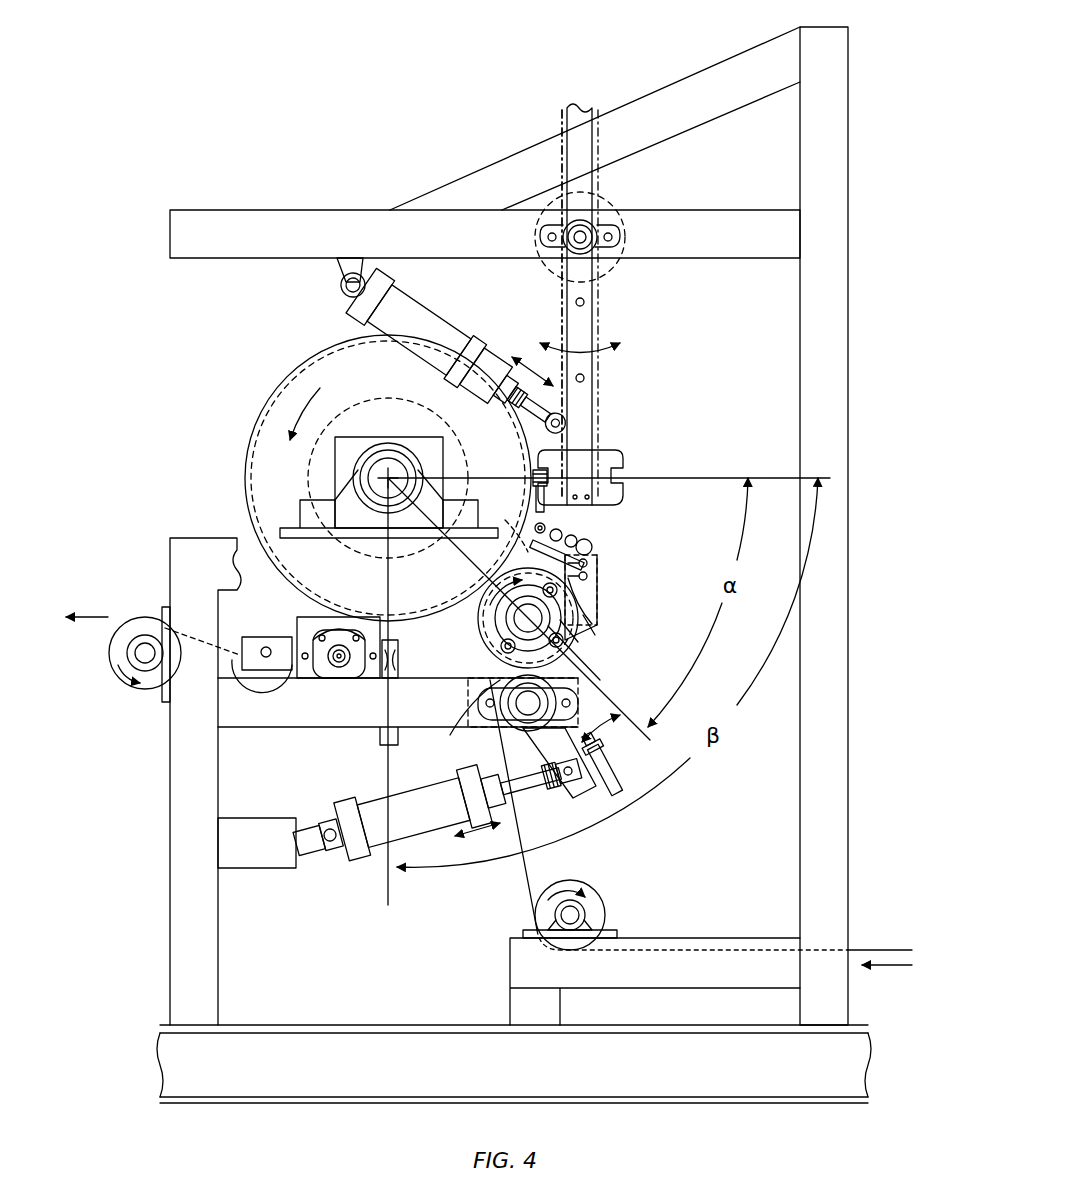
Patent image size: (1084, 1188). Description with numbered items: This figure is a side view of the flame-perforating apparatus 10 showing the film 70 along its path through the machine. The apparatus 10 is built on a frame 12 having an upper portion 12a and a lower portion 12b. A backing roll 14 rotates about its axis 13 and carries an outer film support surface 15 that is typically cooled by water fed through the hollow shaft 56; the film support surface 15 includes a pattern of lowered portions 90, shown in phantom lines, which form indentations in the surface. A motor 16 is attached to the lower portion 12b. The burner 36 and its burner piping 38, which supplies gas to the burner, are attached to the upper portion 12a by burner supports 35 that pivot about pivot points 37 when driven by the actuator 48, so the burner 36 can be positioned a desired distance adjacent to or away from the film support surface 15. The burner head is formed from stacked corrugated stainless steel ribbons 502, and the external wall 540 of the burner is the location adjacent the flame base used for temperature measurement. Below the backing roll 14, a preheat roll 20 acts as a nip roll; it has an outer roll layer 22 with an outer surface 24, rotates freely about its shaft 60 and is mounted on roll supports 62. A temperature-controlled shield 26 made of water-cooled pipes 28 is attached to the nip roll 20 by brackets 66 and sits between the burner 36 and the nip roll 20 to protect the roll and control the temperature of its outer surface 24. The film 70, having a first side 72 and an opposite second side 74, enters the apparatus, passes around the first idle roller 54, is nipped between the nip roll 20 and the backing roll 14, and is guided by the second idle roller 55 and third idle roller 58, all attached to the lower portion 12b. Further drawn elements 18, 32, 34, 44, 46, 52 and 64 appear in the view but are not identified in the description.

The flame-perforating apparatus 10 is at (238, 60).
The frame 12 is at (840, 291).
The upper portion 12a is at (696, 225).
The lower portion 12b is at (737, 940).
The axis 13 is at (388, 478).
The backing roll 14 is at (258, 408).
The film support surface 15 is at (327, 349).
The motor 16 is at (287, 626).
The pillow block bearing 18 is at (300, 536).
The preheat roll 20 is at (488, 618).
The outer roll layer 22 is at (466, 688).
The outer surface 24 is at (590, 638).
The temperature-controlled shield 26 is at (598, 548).
The water-cooled pipes 28 is at (567, 530).
The fasteners 32 is at (592, 578).
The spring 34 is at (590, 598).
The burner supports 35 is at (586, 326).
The burner 36 is at (606, 447).
The pivot points 37 is at (585, 232).
The burner piping 38 is at (562, 304).
The lower actuator cylinder 44 is at (382, 800).
The lever arm 46 is at (512, 770).
The actuator 48 is at (421, 335).
The support post 52 is at (402, 665).
The first idle roller 54 is at (588, 903).
The second idle roller 55 is at (272, 680).
The hollow shaft 56 is at (412, 442).
The third idle roller 58 is at (138, 630).
The shaft 60 is at (580, 650).
The roll supports 62 is at (462, 736).
The stop block 64 is at (620, 766).
The brackets 66 is at (586, 615).
The film 70 is at (893, 935).
The first side 72 is at (870, 942).
The second side 74 is at (525, 881).
The lowered portions 90 is at (246, 470).
The corrugated stainless steel ribbons 502 is at (502, 526).
The external wall 540 is at (538, 478).